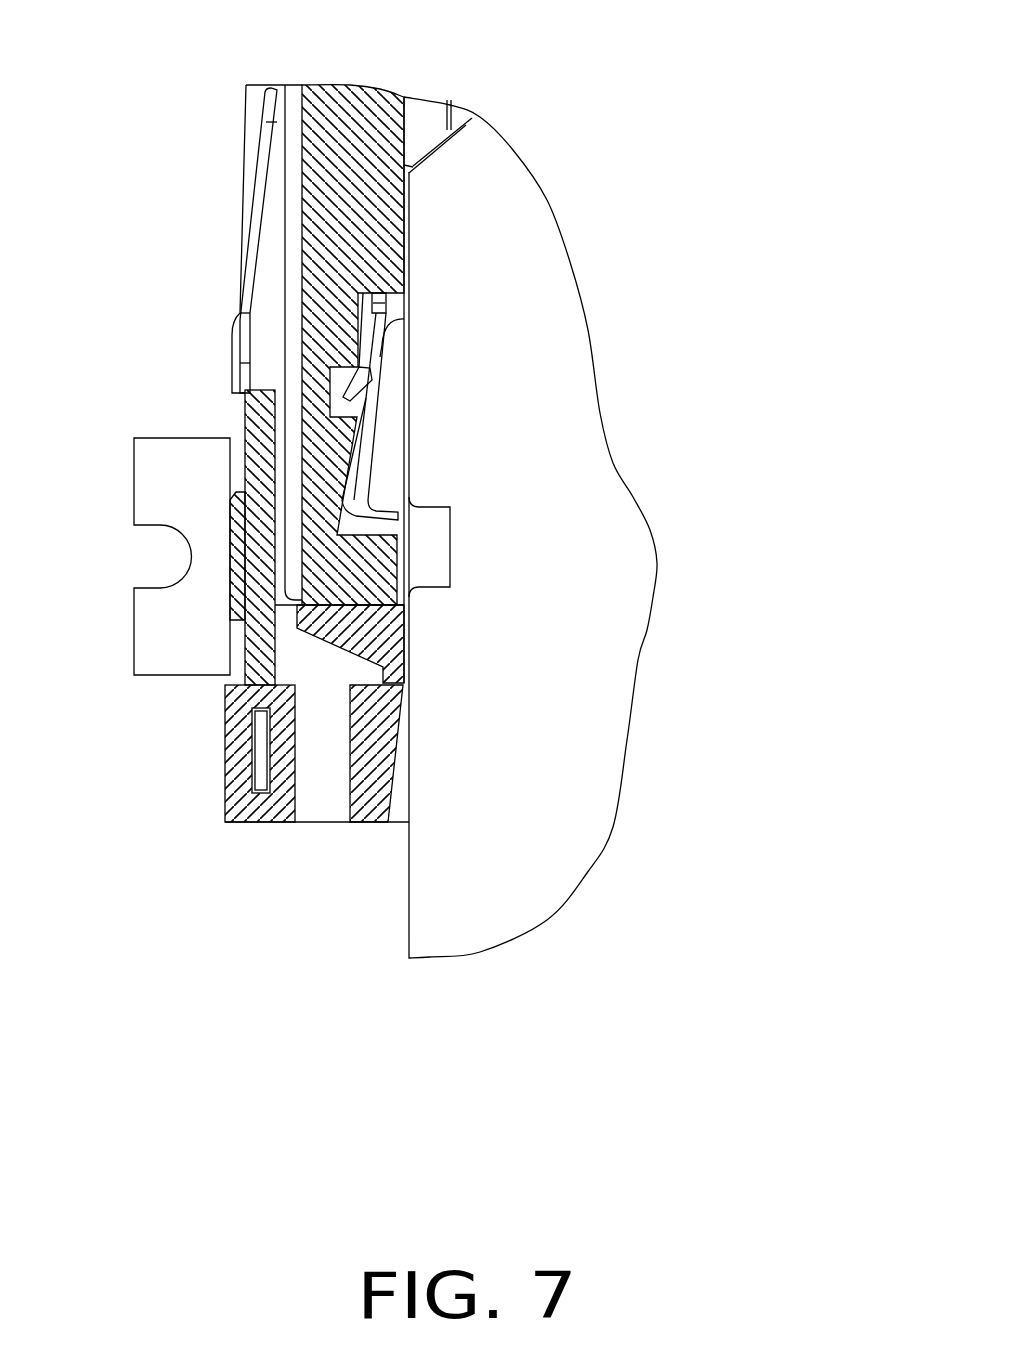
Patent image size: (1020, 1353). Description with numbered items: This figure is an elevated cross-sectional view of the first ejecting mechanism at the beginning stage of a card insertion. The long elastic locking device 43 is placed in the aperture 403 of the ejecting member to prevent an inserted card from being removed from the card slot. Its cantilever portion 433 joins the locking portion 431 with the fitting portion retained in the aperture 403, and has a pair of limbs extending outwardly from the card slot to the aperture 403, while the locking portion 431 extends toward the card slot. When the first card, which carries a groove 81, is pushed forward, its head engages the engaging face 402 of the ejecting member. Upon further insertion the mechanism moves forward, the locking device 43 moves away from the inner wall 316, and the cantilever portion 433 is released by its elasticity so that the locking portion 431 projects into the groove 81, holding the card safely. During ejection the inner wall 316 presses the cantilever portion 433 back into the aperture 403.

The engaging face 402 is at (430, 147).
The inner wall 316 is at (388, 357).
The cantilever portion 433 is at (363, 436).
The locking device 43 is at (564, 427).
The locking portion 431 is at (398, 518).
The groove 81 is at (433, 547).
The aperture 403 is at (340, 377).